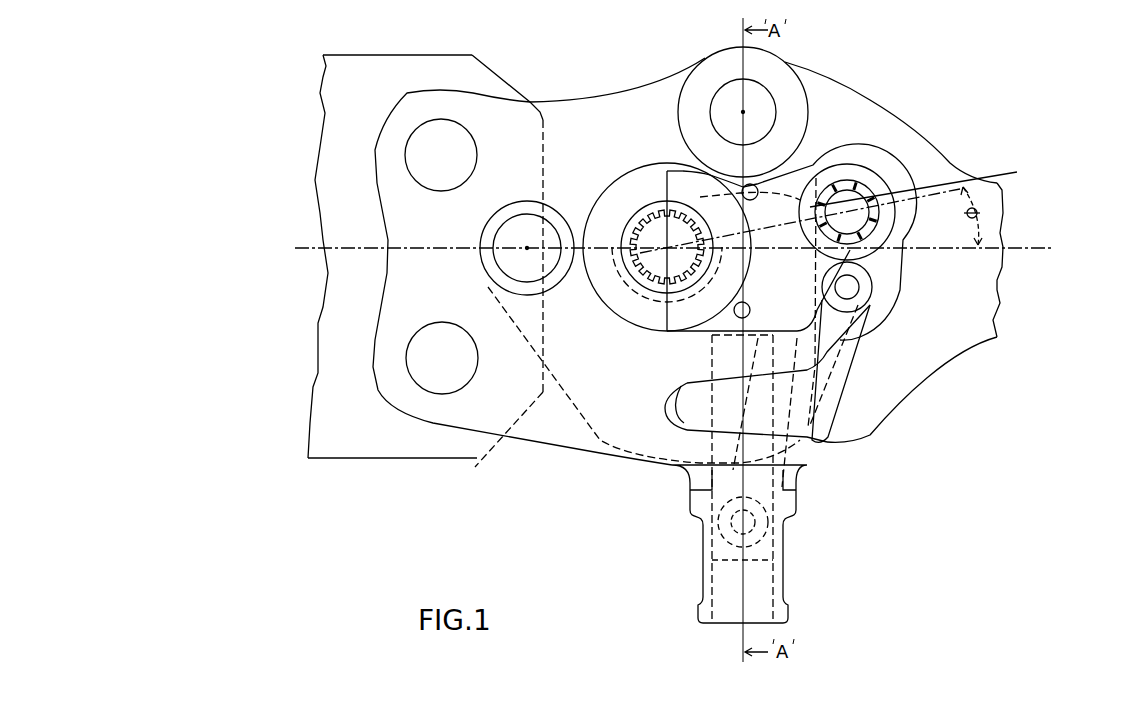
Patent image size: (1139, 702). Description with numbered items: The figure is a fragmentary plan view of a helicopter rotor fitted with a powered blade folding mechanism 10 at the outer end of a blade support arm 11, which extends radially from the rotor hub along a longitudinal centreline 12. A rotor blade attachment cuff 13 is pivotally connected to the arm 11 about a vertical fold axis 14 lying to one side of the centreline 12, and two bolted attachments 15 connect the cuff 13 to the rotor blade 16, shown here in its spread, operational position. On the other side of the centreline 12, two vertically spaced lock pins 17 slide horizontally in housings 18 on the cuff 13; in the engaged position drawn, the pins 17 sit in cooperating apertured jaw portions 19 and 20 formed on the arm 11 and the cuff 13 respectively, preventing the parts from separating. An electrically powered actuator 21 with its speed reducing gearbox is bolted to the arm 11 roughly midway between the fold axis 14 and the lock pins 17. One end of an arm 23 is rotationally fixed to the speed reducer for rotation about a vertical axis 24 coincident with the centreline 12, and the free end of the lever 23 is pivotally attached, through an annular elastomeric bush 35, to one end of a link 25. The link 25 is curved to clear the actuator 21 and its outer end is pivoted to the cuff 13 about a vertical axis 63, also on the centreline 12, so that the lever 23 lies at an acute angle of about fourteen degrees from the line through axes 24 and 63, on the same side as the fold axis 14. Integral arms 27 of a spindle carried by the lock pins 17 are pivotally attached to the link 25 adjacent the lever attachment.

The blade folding mechanism 10 is at (537, 498).
The blade support arm 11 is at (860, 108).
The longitudinal centreline 12 is at (1052, 247).
The rotor blade attachment cuff 13 is at (560, 120).
The vertical fold axis 14 is at (745, 111).
The bolted attachments 15 is at (420, 145).
The rotor blade 16 is at (338, 220).
The lock pins 17 is at (762, 550).
The housings 18 is at (780, 605).
The apertured jaw portion 19 is at (807, 463).
The apertured jaw portion 20 is at (680, 422).
The electrically powered actuator 21 is at (659, 173).
The arm 23 is at (805, 162).
The vertical axis 24 is at (667, 247).
The link 25 is at (612, 415).
The integral arms 27 is at (840, 345).
The annular elastomeric bush 35 is at (600, 270).
The vertical axis 63 is at (527, 250).